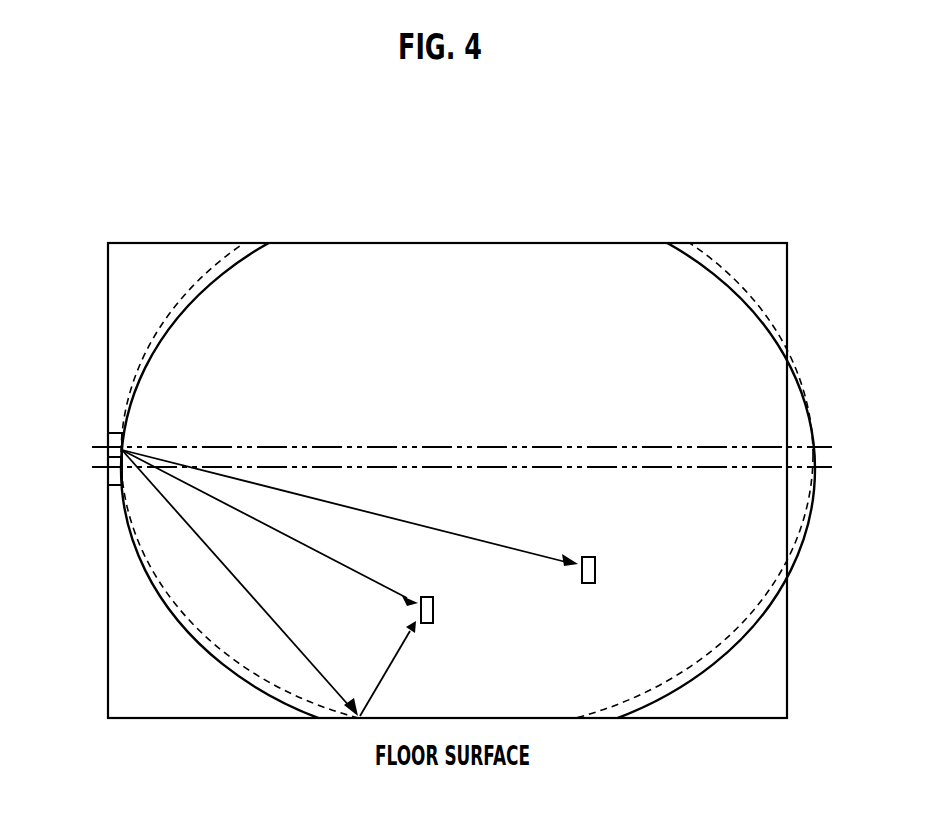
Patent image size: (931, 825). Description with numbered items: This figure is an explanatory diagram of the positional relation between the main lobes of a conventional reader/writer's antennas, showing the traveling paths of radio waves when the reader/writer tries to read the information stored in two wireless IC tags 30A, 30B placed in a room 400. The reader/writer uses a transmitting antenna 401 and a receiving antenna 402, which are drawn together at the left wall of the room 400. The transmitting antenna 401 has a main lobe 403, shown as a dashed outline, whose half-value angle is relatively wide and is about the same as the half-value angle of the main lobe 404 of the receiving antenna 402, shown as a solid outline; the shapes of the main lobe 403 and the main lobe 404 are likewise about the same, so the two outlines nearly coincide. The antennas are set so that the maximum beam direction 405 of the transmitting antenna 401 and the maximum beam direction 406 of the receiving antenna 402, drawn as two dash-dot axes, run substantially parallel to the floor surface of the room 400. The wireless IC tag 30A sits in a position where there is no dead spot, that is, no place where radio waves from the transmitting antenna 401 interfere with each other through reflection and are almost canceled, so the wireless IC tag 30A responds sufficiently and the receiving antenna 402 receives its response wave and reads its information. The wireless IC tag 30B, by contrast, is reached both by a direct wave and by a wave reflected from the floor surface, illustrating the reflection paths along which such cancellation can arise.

The room 400 is at (162, 243).
The transmitting antenna 401 is at (108, 434).
The receiving antenna 402 is at (108, 478).
The main lobe of the transmitting antenna 403 is at (720, 268).
The main lobe of the receiving antenna 404 is at (677, 692).
The maximum beam direction of the transmitting antenna 405 is at (646, 446).
The maximum beam direction of the receiving antenna 406 is at (647, 469).
The wireless IC tag 30A is at (595, 568).
The wireless IC tag 30B is at (433, 609).